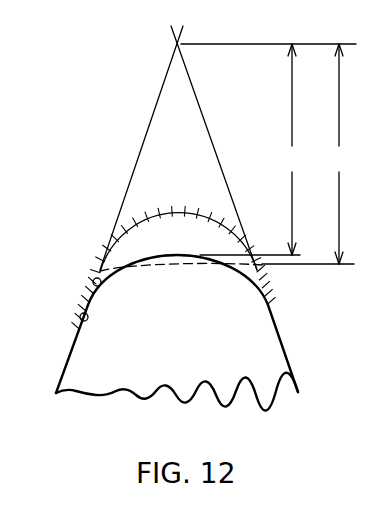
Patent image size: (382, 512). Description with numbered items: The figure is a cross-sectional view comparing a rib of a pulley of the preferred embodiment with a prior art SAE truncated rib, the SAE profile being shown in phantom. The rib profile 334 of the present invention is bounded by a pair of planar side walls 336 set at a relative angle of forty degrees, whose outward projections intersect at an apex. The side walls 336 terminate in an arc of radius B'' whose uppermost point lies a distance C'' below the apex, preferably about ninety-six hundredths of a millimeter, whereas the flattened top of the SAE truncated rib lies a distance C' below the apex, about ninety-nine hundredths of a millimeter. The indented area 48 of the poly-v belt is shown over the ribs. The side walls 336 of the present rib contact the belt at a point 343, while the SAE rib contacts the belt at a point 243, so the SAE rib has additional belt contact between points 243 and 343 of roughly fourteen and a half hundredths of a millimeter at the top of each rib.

The indented area 48 is at (158, 206).
The point 243 is at (94, 279).
The point 343 is at (80, 317).
The rib profile 334 is at (198, 344).
The planar side walls 336 is at (284, 345).
The distance C'' is at (252, 149).
The distance C' is at (308, 154).